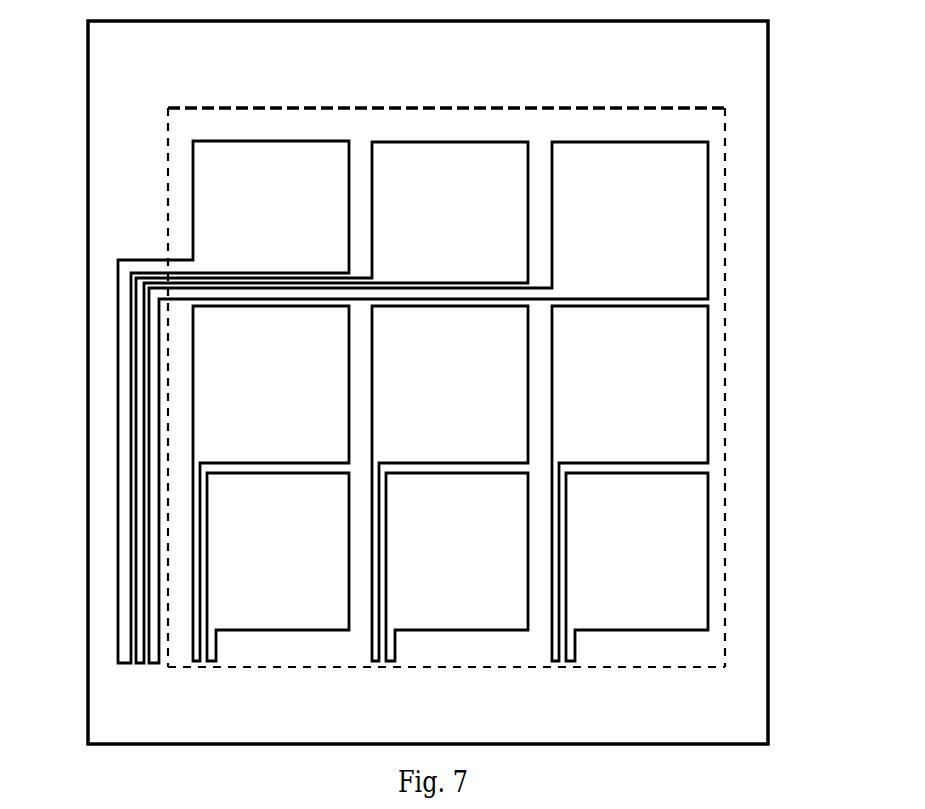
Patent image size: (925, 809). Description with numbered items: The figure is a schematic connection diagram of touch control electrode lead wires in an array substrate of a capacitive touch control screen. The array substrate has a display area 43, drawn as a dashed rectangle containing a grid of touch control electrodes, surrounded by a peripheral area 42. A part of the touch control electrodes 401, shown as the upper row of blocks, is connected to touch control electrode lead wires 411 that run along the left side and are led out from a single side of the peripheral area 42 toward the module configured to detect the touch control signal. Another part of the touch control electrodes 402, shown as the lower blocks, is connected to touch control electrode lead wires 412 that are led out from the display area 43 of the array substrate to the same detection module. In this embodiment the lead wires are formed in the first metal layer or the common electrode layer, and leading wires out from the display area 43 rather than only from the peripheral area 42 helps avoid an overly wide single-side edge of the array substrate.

The peripheral area 42 is at (745, 235).
The display area 43 is at (345, 118).
The touch control electrodes 401 is at (465, 158).
The touch control electrodes 402 is at (670, 418).
The touch control electrode lead wires 411 is at (118, 367).
The touch control electrode lead wires 412 is at (368, 645).